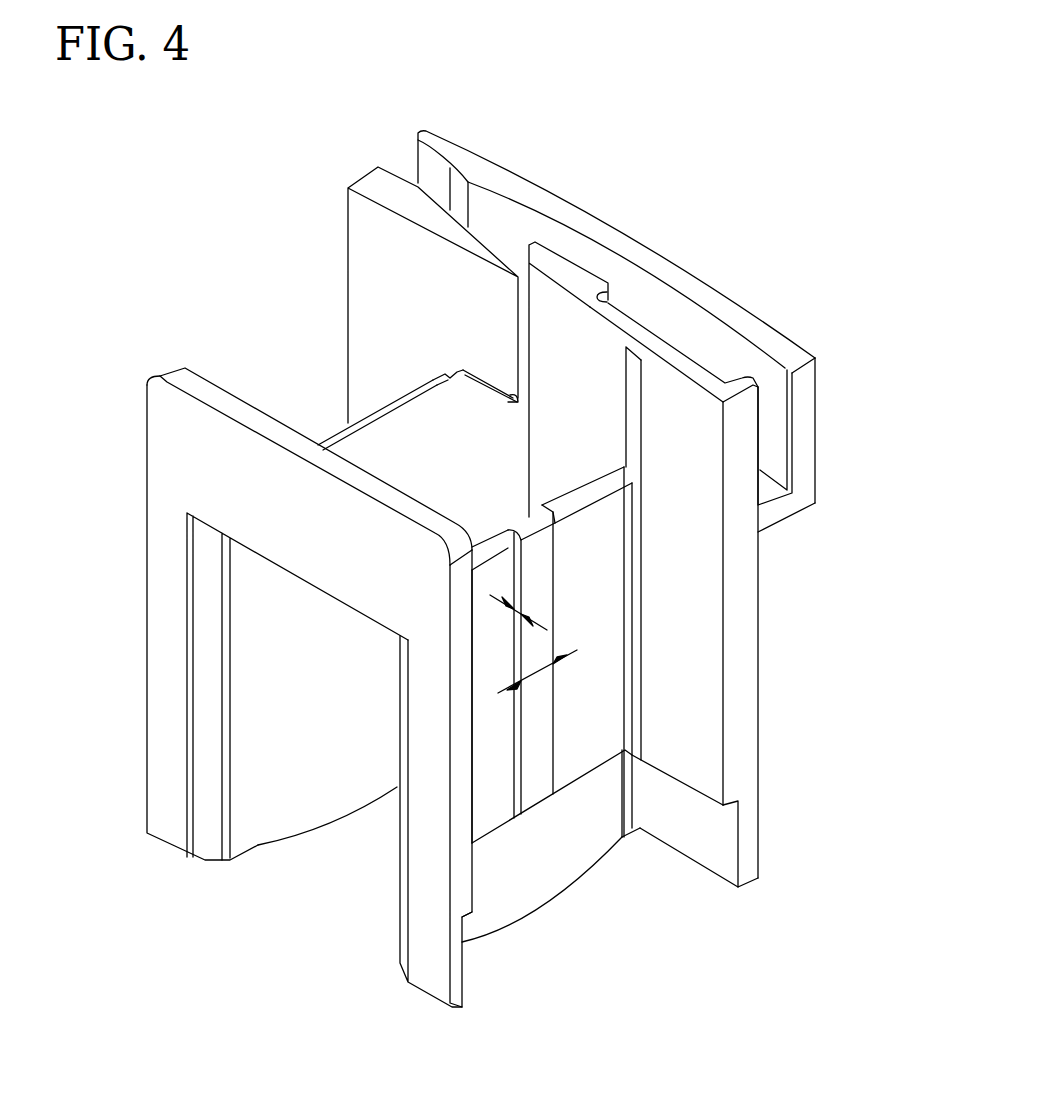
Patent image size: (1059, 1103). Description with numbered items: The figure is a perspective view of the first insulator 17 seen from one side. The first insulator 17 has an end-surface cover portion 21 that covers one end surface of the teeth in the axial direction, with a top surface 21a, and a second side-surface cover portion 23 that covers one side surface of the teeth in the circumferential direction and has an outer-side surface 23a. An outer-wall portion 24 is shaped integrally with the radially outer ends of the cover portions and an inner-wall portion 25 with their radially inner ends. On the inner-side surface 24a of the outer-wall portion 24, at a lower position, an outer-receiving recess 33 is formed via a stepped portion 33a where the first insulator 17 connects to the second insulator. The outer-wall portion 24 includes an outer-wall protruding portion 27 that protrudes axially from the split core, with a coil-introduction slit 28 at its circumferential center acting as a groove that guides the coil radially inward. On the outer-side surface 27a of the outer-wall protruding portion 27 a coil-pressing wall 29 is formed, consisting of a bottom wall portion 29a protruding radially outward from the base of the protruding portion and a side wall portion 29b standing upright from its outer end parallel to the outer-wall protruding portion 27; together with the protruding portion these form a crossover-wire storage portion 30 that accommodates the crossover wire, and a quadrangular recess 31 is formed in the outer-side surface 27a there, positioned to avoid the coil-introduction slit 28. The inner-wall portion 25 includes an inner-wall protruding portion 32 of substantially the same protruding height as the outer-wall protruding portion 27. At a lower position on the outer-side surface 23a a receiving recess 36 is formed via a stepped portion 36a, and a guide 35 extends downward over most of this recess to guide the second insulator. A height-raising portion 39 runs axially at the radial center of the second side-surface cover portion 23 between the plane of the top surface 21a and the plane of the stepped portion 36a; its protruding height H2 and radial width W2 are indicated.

The first insulator 17 is at (860, 618).
The end-surface cover portion 21 is at (417, 422).
The top surface 21a is at (475, 386).
The second side-surface cover portion 23 is at (597, 828).
The outer-side surface 23a is at (488, 765).
The outer-wall portion 24 is at (757, 673).
The inner-side surface 24a is at (690, 730).
The inner-wall portion 25 is at (158, 752).
The outer-wall protruding portion 27 is at (747, 440).
The outer-side surface 27a is at (400, 175).
The coil-introduction slit 28 is at (555, 317).
The coil-pressing wall 29 is at (783, 331).
The bottom wall portion 29a is at (788, 523).
The side wall portion 29b is at (818, 463).
The crossover-wire storage portion 30 is at (702, 345).
The recess 31 is at (645, 325).
The inner-wall protruding portion 32 is at (165, 448).
The outer-receiving recess 33 is at (717, 852).
The stepped portion 33a is at (732, 800).
The guide 35 is at (297, 842).
The receiving recess 36 is at (580, 853).
The stepped portion 36a is at (620, 793).
The height-raising portion 39 is at (540, 730).
The protruding height H2 is at (520, 613).
The width W2 is at (538, 670).